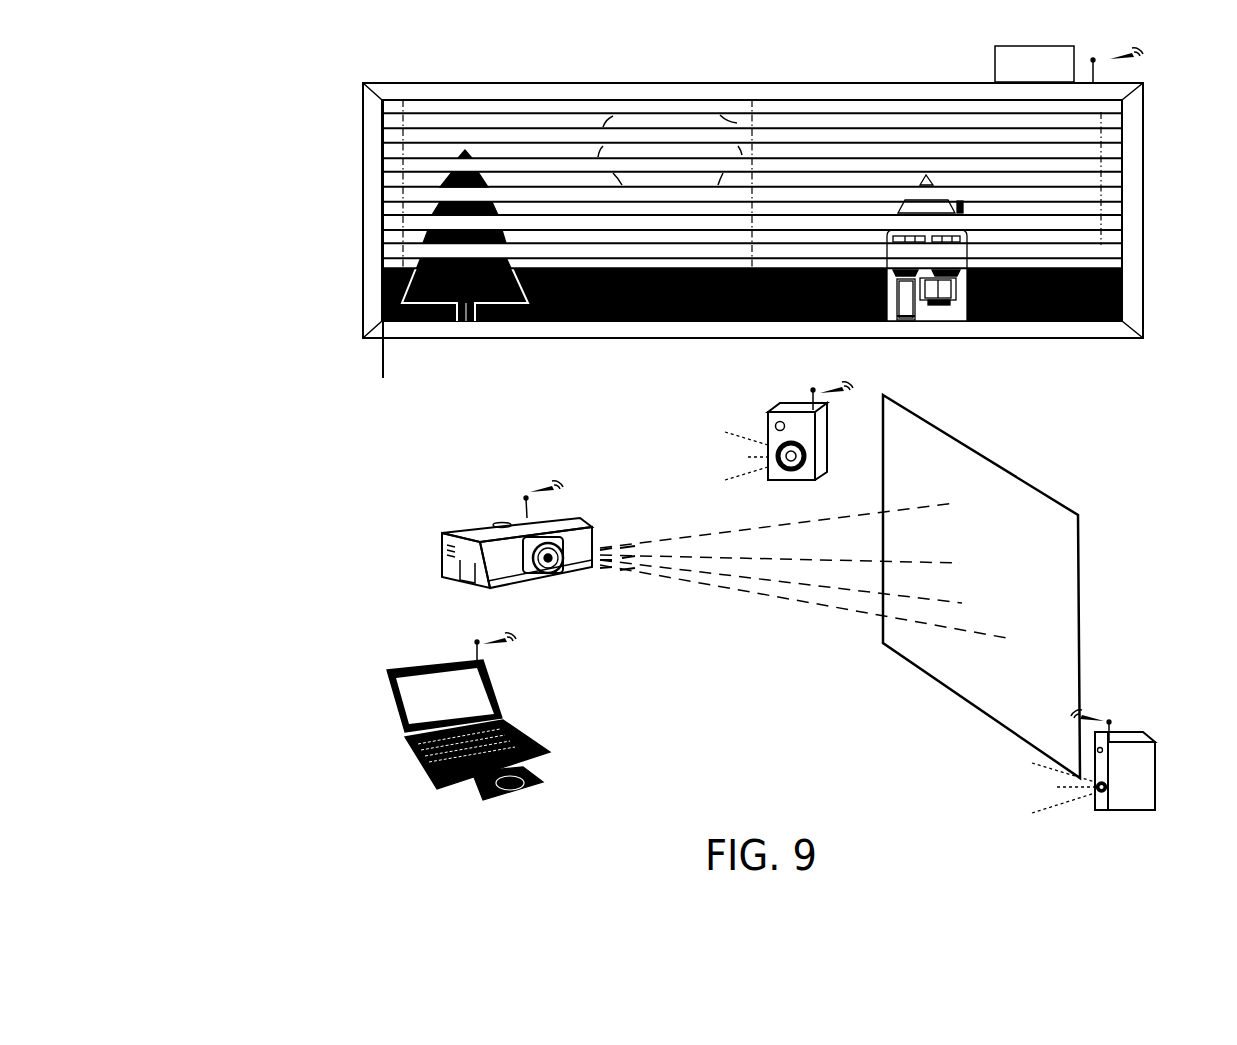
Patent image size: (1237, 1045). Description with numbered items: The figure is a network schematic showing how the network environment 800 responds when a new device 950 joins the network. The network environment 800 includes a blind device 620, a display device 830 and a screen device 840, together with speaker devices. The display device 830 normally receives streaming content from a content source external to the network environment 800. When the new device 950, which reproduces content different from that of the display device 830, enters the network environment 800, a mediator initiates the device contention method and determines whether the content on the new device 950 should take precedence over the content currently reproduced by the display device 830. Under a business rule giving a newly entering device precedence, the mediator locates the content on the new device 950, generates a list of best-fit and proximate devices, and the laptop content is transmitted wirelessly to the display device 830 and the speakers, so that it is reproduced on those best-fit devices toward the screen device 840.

The network environment 800 is at (256, 236).
The blind device 620 is at (1148, 207).
The display device 830 is at (440, 571).
The screen device 840 is at (1005, 463).
The new device 950 is at (405, 767).